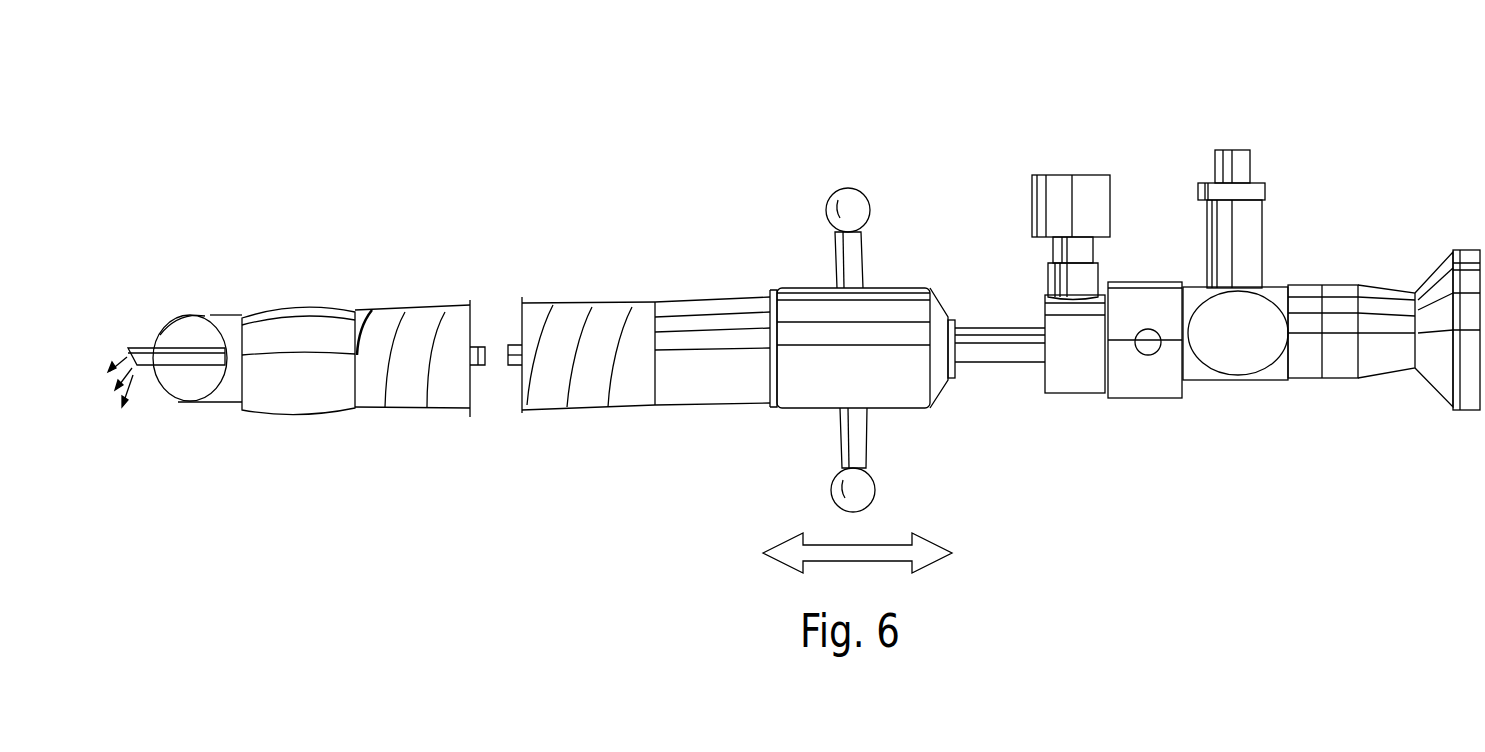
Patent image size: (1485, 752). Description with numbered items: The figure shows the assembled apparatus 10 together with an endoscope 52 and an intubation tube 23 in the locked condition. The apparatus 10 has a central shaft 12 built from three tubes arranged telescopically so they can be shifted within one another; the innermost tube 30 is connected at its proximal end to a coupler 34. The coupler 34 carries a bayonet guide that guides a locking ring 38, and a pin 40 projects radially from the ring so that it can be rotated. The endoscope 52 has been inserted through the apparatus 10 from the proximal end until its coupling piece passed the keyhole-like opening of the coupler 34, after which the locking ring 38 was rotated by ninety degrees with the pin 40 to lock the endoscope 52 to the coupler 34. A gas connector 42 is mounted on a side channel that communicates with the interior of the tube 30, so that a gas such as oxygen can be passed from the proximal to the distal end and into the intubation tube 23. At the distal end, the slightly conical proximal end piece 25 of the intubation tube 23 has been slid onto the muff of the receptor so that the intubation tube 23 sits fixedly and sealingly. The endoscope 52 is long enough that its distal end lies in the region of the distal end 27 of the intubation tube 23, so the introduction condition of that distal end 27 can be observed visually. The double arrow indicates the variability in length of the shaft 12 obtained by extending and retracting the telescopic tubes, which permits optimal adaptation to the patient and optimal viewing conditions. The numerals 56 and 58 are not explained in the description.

The apparatus 10 is at (935, 182).
The central shaft 12 is at (955, 302).
The intubation tube 23 is at (418, 293).
The proximal end piece 25 is at (702, 313).
The distal end 27 is at (190, 318).
The tube 30 is at (995, 347).
The coupler 34 is at (1107, 395).
The locking ring 38 is at (1155, 380).
The pin 40 is at (1143, 343).
The gas connector 42 is at (1088, 190).
The endoscope 52 is at (1293, 185).
The eyepiece housing section 56 is at (1337, 293).
The pin 58 is at (183, 360).